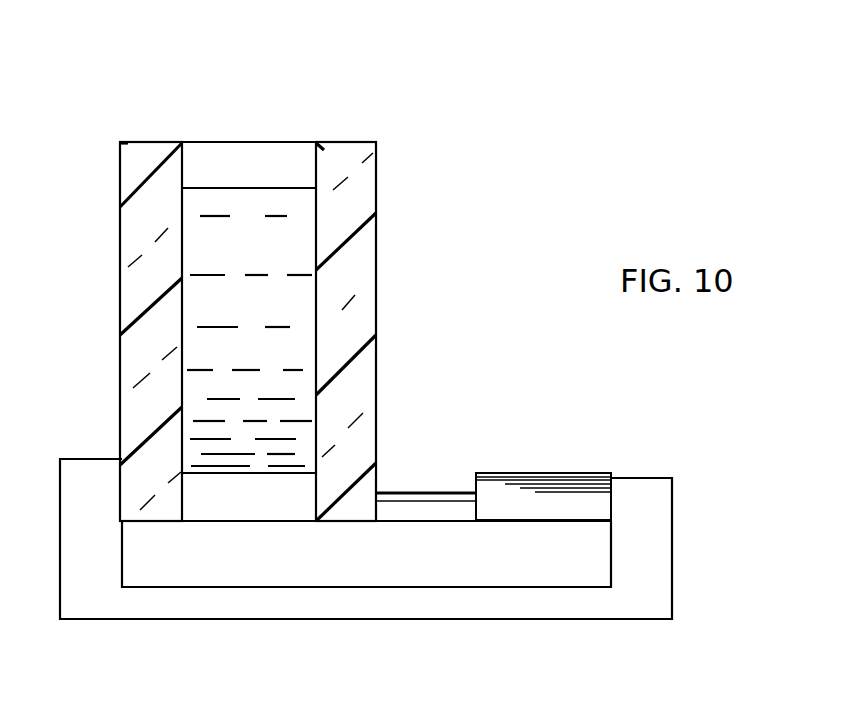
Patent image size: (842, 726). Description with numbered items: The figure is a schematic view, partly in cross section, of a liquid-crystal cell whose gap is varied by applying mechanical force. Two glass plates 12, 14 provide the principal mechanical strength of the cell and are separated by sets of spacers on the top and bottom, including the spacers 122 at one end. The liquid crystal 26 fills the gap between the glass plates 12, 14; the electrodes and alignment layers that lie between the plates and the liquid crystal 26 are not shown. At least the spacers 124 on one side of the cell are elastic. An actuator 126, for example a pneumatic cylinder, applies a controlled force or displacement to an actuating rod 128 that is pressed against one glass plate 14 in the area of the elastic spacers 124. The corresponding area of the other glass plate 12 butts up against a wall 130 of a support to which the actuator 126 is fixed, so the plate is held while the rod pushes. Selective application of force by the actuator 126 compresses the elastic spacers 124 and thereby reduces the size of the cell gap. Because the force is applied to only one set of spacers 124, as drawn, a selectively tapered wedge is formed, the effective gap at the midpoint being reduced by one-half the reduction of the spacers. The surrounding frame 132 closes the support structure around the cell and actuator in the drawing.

The glass plate 12 is at (130, 230).
The glass plate 14 is at (363, 209).
The liquid crystal 26 is at (305, 300).
The spacer 122 is at (230, 148).
The elastic spacers 124 is at (225, 511).
The actuator 126 is at (580, 478).
The actuating rod 128 is at (430, 488).
The wall 130 is at (92, 465).
The wire 132 is at (415, 604).